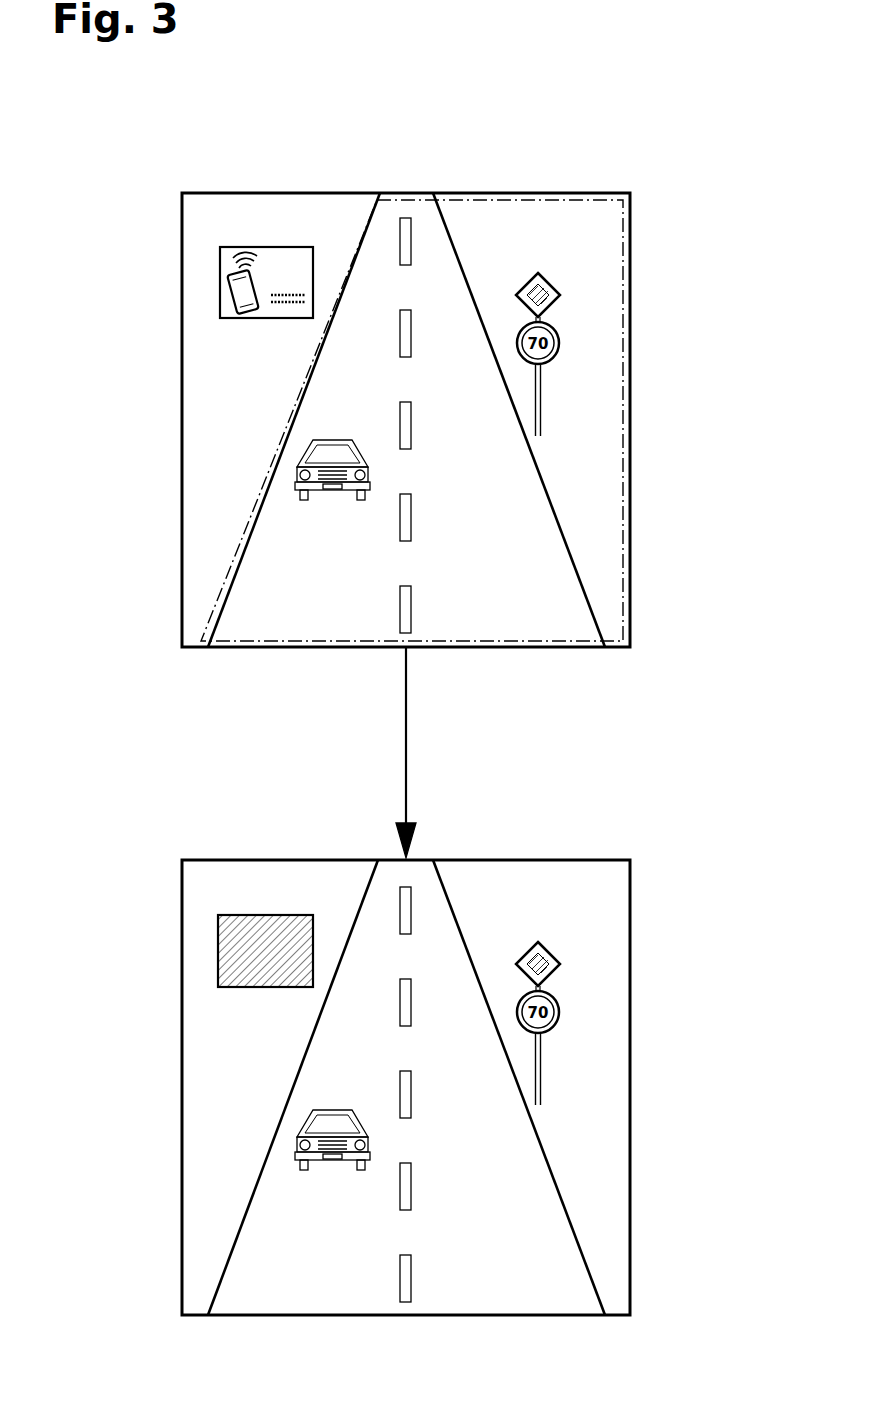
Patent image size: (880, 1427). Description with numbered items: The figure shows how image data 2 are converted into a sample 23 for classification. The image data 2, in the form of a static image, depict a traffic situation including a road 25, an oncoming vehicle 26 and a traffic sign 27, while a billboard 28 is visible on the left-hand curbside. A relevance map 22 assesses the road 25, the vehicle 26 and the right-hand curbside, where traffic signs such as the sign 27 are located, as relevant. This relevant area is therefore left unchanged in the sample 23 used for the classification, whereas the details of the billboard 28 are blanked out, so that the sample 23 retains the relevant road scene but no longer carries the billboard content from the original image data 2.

The image data 2 is at (540, 192).
The relevance map 22 is at (623, 270).
The sample 23 is at (542, 859).
The road 25 is at (307, 383).
The oncoming vehicle 26 is at (300, 450).
The traffic sign 27 is at (545, 391).
The billboard 28 is at (220, 286).